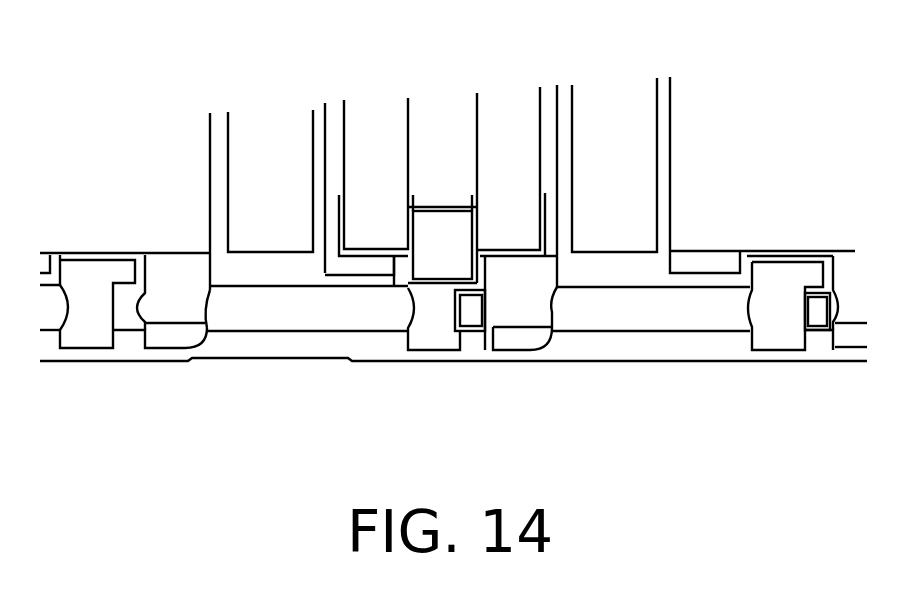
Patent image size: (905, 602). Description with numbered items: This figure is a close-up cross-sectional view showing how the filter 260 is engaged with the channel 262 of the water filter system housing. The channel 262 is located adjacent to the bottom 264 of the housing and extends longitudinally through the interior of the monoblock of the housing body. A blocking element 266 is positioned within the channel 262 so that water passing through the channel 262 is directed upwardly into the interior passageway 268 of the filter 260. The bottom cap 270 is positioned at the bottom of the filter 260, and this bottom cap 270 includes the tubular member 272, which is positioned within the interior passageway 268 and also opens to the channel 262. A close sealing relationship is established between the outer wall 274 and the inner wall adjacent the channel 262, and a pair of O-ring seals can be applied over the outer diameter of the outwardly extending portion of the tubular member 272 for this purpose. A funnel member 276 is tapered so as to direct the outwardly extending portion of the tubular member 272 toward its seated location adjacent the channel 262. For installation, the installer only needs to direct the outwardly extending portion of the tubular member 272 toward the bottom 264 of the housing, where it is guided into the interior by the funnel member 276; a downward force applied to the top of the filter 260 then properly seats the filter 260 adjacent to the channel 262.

The filter 260 is at (538, 162).
The channel 262 is at (262, 322).
The bottom 264 is at (292, 362).
The blocking element 266 is at (453, 316).
The interior passageway 268 is at (423, 171).
The bottom cap 270 is at (347, 222).
The tubular member 272 is at (414, 228).
The outer wall 274 is at (406, 272).
The funnel member 276 is at (488, 257).